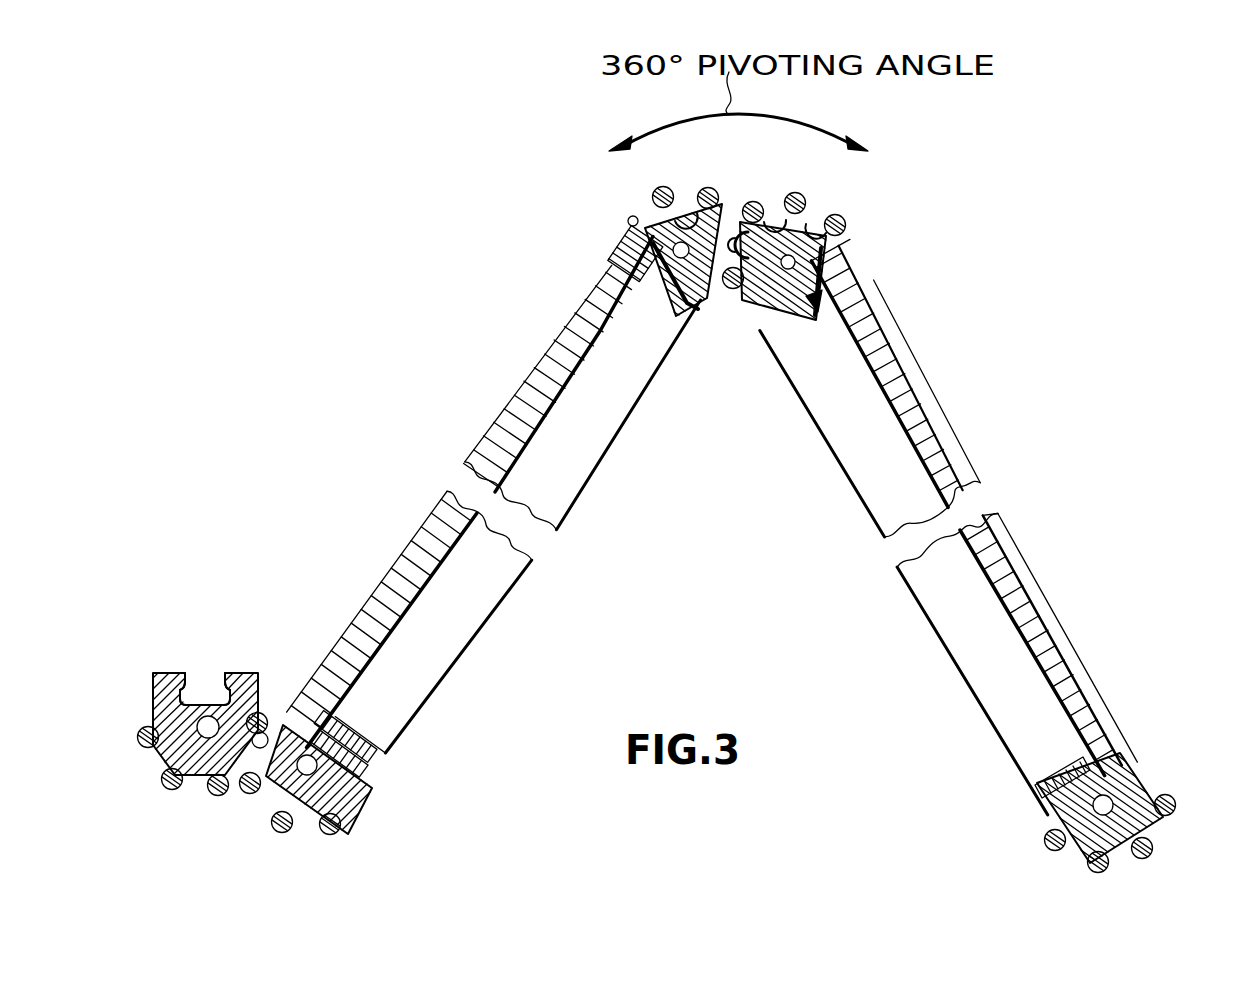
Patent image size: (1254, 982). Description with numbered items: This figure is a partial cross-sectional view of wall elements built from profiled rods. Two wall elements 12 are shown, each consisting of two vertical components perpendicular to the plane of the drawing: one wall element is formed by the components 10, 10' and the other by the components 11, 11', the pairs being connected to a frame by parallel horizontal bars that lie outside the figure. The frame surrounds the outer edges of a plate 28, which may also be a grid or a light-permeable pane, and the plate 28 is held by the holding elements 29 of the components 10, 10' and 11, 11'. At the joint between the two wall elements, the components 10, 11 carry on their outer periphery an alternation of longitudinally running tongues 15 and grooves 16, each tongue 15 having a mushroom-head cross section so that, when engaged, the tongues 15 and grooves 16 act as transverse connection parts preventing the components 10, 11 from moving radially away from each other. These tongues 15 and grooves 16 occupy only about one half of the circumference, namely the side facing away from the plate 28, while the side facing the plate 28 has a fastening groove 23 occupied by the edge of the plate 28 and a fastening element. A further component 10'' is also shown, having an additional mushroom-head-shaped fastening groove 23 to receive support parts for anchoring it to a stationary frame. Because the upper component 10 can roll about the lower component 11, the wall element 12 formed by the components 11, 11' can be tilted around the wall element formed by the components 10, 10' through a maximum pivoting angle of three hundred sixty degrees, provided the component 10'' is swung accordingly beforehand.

The component 10 is at (621, 252).
The component 11 is at (845, 252).
The wall element 12 is at (712, 529).
The tongue 15 is at (742, 192).
The groove 16 is at (752, 211).
The fastening groove 23 is at (246, 638).
The plate 28 is at (719, 500).
The holding element 29 is at (736, 356).
The component 10' is at (306, 809).
The component 10'' is at (203, 674).
The component 11' is at (1140, 782).